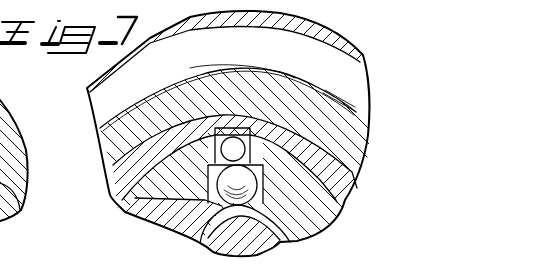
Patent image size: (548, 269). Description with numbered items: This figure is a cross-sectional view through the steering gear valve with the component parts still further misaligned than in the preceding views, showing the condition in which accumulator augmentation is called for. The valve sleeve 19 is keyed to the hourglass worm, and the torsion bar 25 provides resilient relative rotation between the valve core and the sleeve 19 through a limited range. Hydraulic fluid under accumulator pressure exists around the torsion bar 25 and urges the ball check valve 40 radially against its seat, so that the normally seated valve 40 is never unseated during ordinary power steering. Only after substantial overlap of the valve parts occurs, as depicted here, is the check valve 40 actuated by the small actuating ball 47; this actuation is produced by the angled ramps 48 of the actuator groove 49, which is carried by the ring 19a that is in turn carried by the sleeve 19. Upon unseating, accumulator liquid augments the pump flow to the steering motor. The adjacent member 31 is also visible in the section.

The valve sleeve 19 is at (125, 167).
The ring 19a is at (137, 193).
The torsion bar 25 is at (215, 236).
The adjacent member 31 is at (0, 223).
The check valve 40 is at (153, 213).
The small actuating ball 47 is at (337, 180).
The angled ramps 48 is at (202, 100).
The actuator groove 49 is at (247, 130).